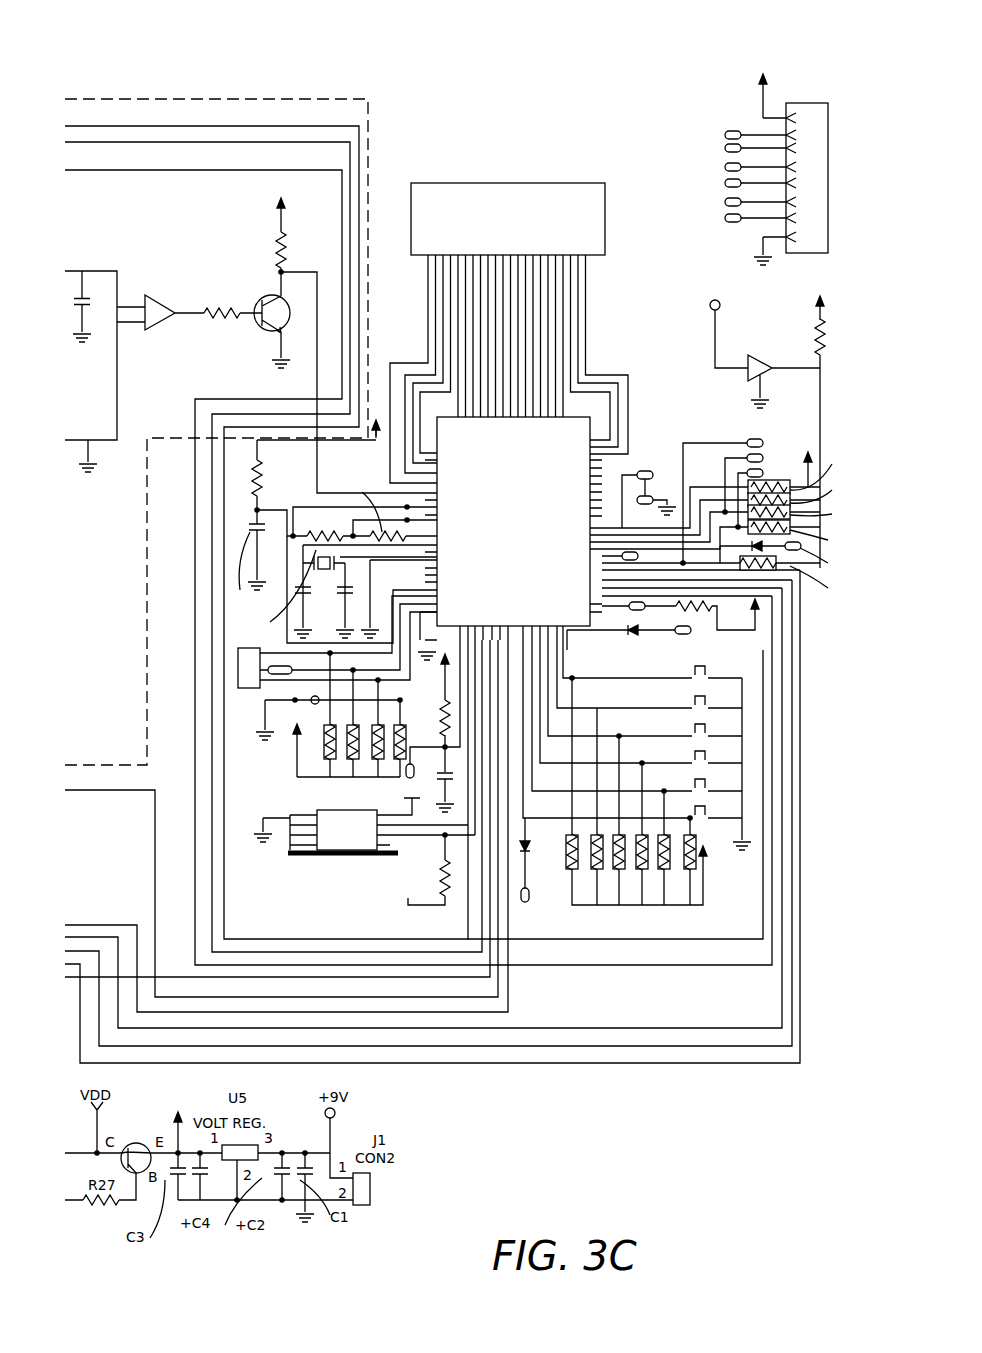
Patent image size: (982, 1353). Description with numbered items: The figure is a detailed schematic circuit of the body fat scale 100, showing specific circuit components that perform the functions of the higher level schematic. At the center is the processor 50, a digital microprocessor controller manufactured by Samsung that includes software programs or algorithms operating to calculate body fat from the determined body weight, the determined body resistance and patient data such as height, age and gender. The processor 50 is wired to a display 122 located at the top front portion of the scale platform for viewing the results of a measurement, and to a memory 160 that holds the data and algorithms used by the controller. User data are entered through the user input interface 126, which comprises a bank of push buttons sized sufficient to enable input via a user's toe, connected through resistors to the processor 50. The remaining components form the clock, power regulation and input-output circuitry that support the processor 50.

The electronic measuring device circuit 100 is at (458, 82).
The display 122 is at (538, 168).
The processor 50 is at (612, 472).
The interface portion 126 is at (808, 592).
The memory 160 is at (346, 852).